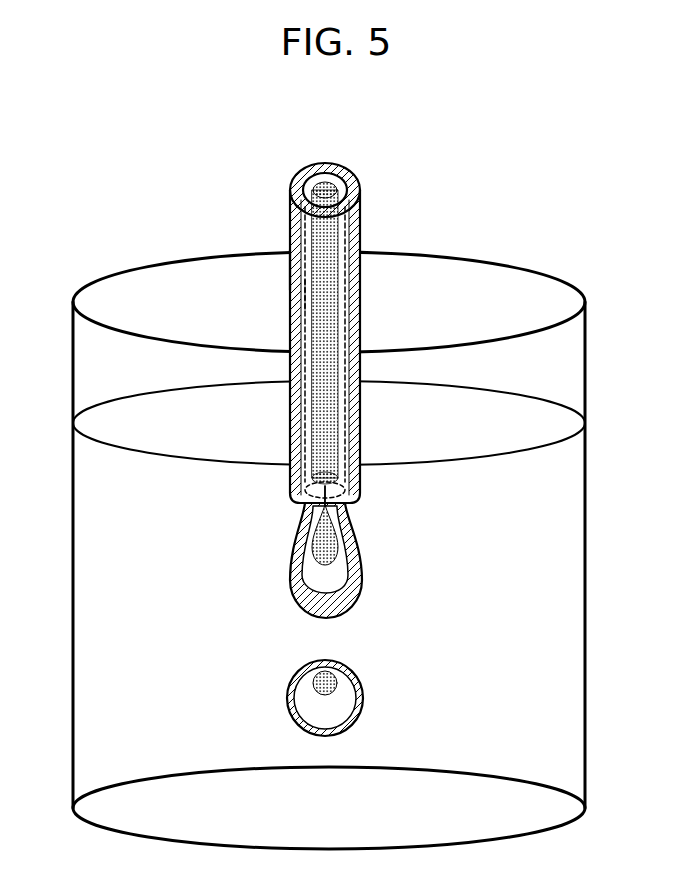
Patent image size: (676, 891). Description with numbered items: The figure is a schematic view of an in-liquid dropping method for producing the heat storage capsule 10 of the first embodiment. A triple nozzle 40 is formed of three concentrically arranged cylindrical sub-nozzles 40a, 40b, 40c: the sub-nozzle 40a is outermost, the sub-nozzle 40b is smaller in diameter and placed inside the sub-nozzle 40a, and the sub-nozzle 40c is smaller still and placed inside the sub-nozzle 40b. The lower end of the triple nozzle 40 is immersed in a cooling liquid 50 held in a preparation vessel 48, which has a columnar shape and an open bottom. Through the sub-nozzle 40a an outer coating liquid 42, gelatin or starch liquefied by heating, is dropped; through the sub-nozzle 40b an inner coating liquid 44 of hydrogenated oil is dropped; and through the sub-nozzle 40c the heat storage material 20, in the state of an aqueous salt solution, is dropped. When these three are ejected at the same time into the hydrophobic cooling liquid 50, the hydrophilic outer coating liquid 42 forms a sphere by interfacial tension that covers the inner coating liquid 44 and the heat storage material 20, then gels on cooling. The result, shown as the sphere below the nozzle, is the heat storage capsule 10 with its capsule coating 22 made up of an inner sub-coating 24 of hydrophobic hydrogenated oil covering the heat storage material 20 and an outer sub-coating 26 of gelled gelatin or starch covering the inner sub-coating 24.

The heat storage capsule 10 is at (283, 673).
The heat storage material 20 is at (325, 325).
The capsule coating 22 is at (367, 684).
The inner sub-coating 24 is at (342, 693).
The outer sub-coating 26 is at (352, 666).
The triple nozzle 40 is at (352, 297).
The sub-nozzle 40a is at (325, 163).
The sub-nozzle 40b is at (340, 167).
The sub-nozzle 40c is at (360, 178).
The outer coating liquid 42 is at (296, 270).
The inner coating liquid 44 is at (305, 297).
The preparation vessel 48 is at (585, 495).
The cooling liquid 50 is at (545, 535).